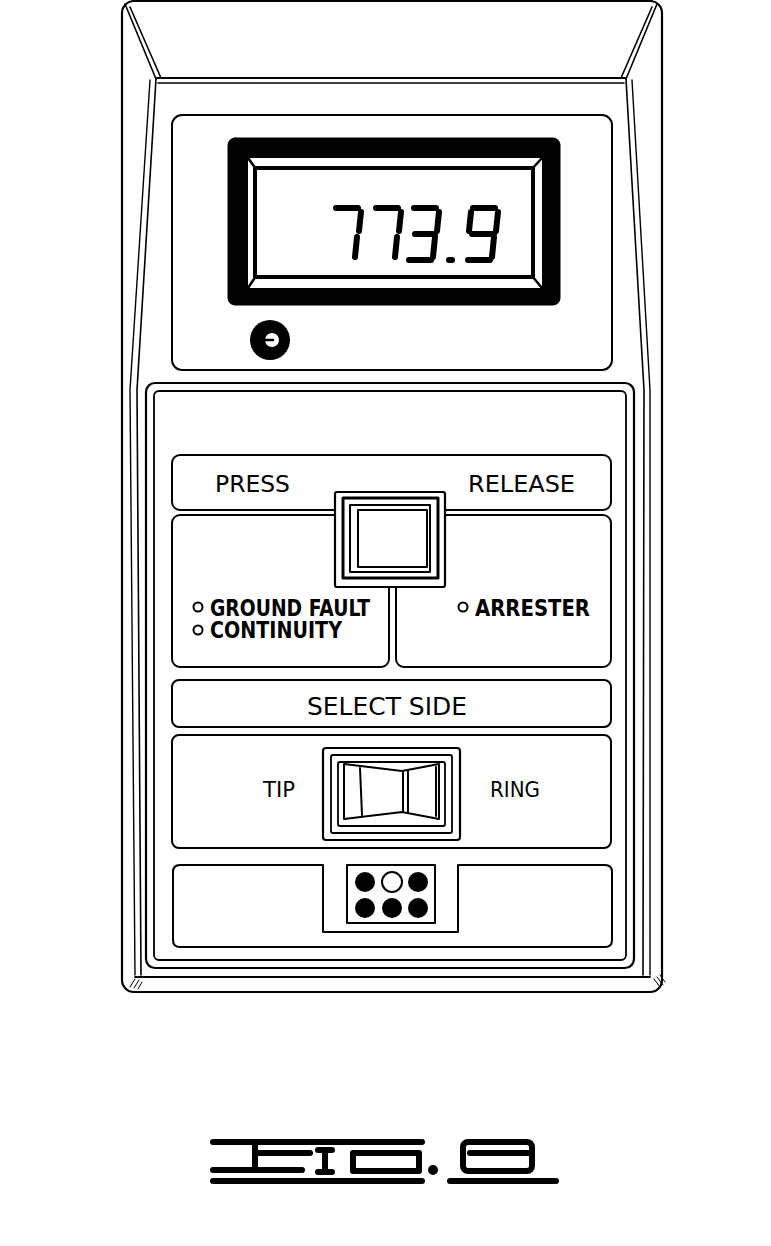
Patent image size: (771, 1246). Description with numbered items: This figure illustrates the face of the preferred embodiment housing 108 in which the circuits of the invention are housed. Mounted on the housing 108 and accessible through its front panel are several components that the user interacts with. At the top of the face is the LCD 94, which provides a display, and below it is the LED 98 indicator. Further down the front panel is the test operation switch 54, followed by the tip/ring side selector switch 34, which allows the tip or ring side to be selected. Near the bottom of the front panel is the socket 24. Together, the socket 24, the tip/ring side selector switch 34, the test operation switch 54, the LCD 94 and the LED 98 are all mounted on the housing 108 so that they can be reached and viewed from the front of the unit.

The housing 108 is at (136, 901).
The LCD 94 is at (272, 247).
The LED 98 is at (250, 342).
The test operation switch 54 is at (373, 538).
The tip/ring side selector switch 34 is at (375, 800).
The socket 24 is at (382, 893).